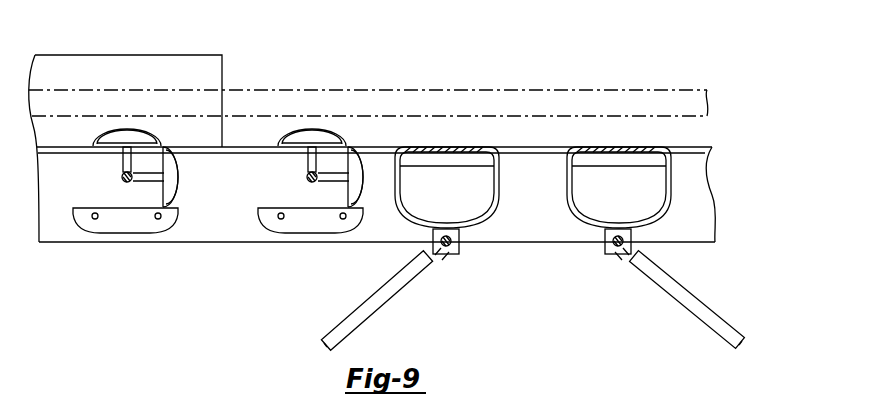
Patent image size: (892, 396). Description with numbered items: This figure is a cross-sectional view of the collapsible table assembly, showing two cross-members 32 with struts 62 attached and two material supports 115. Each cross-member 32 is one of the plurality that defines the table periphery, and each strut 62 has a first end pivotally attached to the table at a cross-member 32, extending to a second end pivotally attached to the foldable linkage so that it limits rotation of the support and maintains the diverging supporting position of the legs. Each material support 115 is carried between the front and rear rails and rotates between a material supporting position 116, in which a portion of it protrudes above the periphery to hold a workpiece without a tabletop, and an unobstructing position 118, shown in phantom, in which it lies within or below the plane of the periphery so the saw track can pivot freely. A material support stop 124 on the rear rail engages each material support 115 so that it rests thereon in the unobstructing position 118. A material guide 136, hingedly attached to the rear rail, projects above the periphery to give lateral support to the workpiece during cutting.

The material support 115 is at (70, 192).
The material guide 136 is at (62, 80).
The material supporting position 116 is at (135, 137).
The unobstructing position 118 is at (177, 176).
The material support stop 124 is at (122, 227).
The cross-member 32 is at (584, 208).
The strut 62 is at (398, 290).